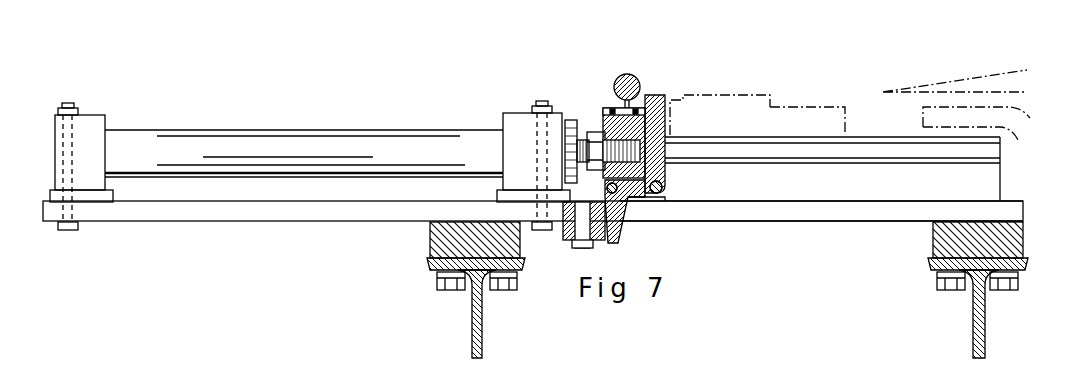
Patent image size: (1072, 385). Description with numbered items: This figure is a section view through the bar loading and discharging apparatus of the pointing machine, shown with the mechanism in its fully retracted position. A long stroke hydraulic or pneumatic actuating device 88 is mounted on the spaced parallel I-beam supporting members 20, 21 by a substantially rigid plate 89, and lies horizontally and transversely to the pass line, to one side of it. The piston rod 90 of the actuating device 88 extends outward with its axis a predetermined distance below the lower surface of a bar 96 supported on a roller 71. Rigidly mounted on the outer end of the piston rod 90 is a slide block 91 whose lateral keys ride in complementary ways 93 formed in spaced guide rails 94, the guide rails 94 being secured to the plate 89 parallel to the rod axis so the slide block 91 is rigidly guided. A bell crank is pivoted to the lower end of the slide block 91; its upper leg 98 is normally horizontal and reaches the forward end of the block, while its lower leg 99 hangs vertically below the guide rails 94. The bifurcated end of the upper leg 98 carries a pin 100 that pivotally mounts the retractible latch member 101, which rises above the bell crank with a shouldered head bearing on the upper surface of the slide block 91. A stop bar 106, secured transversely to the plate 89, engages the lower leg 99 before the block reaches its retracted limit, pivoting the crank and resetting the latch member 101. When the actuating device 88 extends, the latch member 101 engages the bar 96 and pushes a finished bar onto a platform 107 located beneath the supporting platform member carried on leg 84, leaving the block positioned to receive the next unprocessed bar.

The I-beam supporting member 20 is at (985, 350).
The I-beam supporting member 21 is at (482, 334).
The roller 71 is at (810, 112).
The leg 84 is at (975, 84).
The actuating device 88 is at (300, 137).
The plate 89 is at (238, 218).
The piston rod 90 is at (577, 120).
The slide block 91 is at (621, 100).
The way 93 is at (885, 158).
The guide rail 94 is at (768, 193).
The bar 96 is at (737, 95).
The upper leg 98 is at (648, 203).
The lower leg 99 is at (618, 243).
The pin 100 is at (663, 185).
The latch member 101 is at (656, 96).
The stop bar 106 is at (605, 240).
The platform 107 is at (1013, 112).